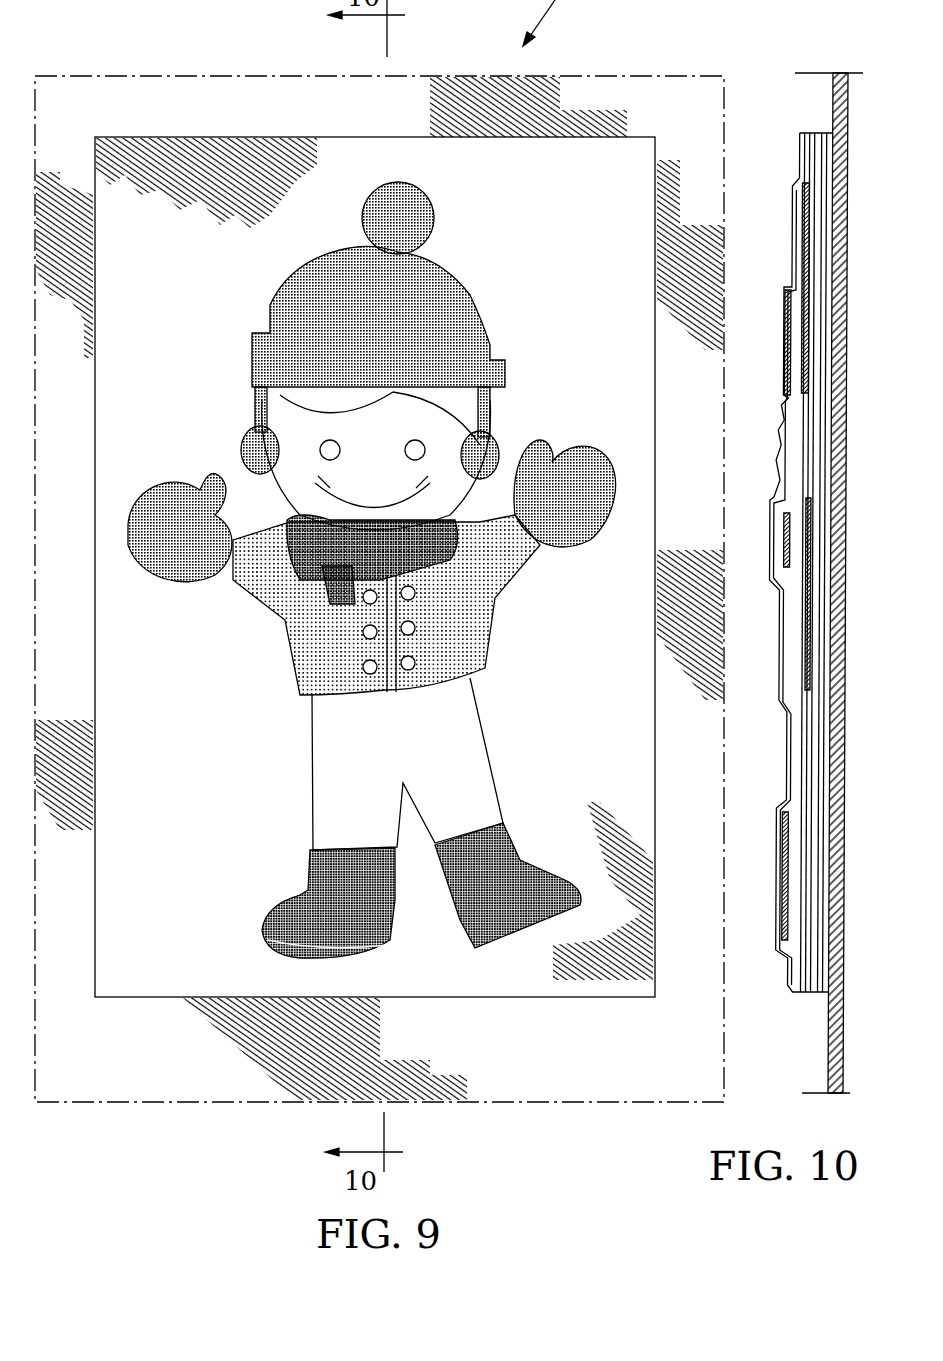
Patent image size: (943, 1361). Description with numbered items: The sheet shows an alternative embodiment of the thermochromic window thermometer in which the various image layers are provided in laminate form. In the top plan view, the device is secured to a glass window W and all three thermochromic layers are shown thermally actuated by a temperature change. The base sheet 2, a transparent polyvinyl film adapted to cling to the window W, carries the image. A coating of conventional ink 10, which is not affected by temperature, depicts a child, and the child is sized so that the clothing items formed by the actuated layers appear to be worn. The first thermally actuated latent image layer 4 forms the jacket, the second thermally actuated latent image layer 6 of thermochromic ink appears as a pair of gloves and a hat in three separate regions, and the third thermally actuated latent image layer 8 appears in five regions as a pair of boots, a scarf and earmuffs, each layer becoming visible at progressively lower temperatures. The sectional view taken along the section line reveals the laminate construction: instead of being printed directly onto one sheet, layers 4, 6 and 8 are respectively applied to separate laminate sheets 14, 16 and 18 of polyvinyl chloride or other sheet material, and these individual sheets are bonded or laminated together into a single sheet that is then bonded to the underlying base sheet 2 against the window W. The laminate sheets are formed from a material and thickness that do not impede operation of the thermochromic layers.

In FIG. 9, the base sheet 2 is at (219, 148).
In FIG. 10, the base sheet 2 is at (805, 962).
In FIG. 9, the first thermally actuated latent image layer 4 is at (490, 633).
In FIG. 10, the first thermally actuated latent image layer 4 is at (805, 562).
In FIG. 9, the second thermally actuated latent image layer 6 is at (470, 284).
In FIG. 10, the second thermally actuated latent image layer 6 is at (806, 236).
In FIG. 9, the third thermally actuated latent image layer 8 is at (240, 458).
In FIG. 10, the third thermally actuated latent image layer 8 is at (788, 533).
In FIG. 9, the coating of conventional ink 10 is at (480, 713).
In FIG. 10, the coating of conventional ink 10 is at (790, 397).
In FIG. 10, the laminate sheet 14 is at (805, 705).
In FIG. 10, the laminate sheet 16 is at (810, 133).
In FIG. 10, the laminate sheet 18 is at (793, 185).
In FIG. 9, the window W is at (112, 93).
In FIG. 10, the window W is at (833, 1043).